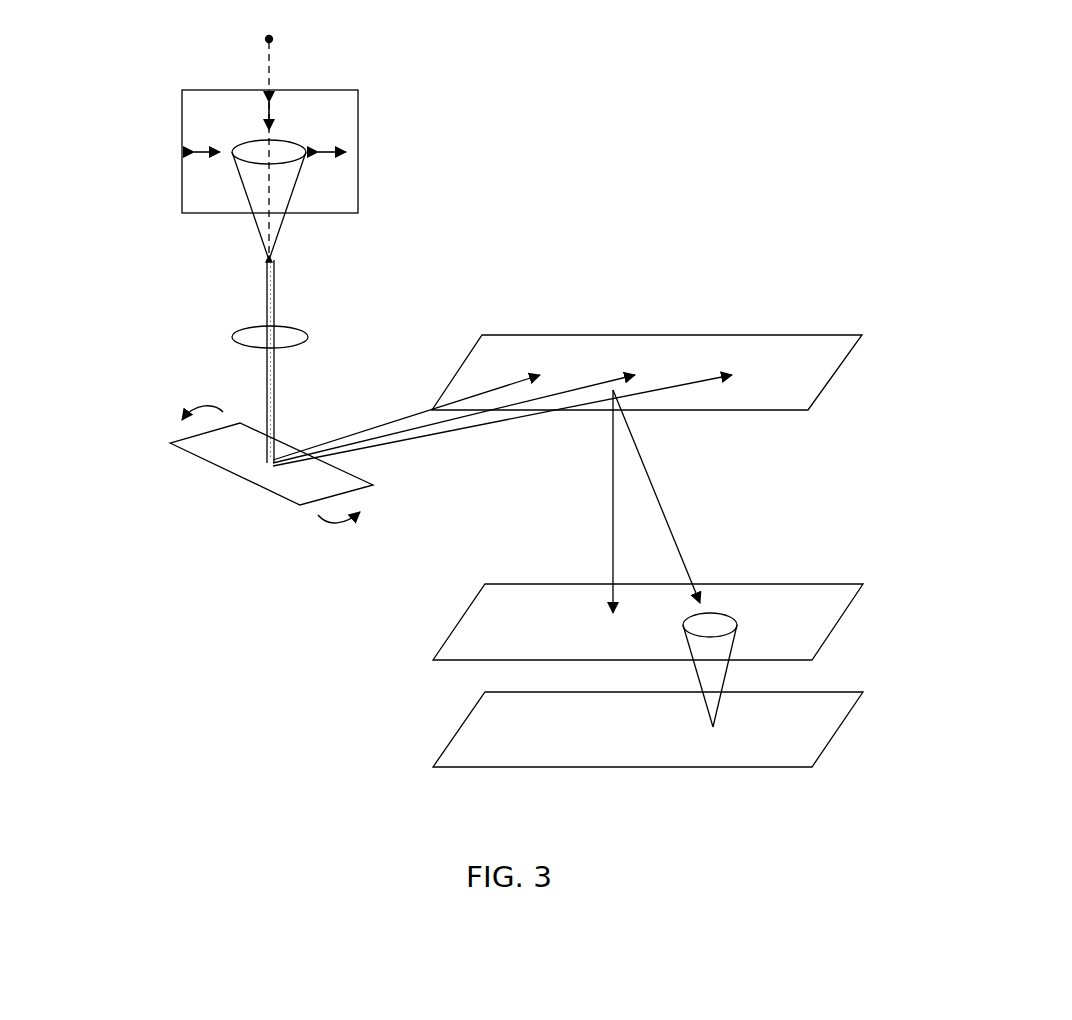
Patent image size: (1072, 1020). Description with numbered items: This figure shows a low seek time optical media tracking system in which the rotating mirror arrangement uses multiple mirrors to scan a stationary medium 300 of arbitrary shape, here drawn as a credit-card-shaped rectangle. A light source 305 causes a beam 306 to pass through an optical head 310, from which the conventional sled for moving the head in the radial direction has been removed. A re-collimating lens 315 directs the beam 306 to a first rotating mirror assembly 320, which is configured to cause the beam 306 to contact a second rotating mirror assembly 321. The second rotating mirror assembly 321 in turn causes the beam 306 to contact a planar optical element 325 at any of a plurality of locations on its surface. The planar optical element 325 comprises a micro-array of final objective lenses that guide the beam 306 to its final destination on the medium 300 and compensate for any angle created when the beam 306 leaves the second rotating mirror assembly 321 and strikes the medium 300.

The medium 300 is at (480, 725).
The light source 305 is at (272, 38).
The beam 306 is at (267, 287).
The optical head 310 is at (182, 112).
The re-collimating lens 315 is at (232, 337).
The first rotating mirror assembly 320 is at (250, 483).
The second rotating mirror assembly 321 is at (672, 335).
The planar optical element 325 is at (783, 583).